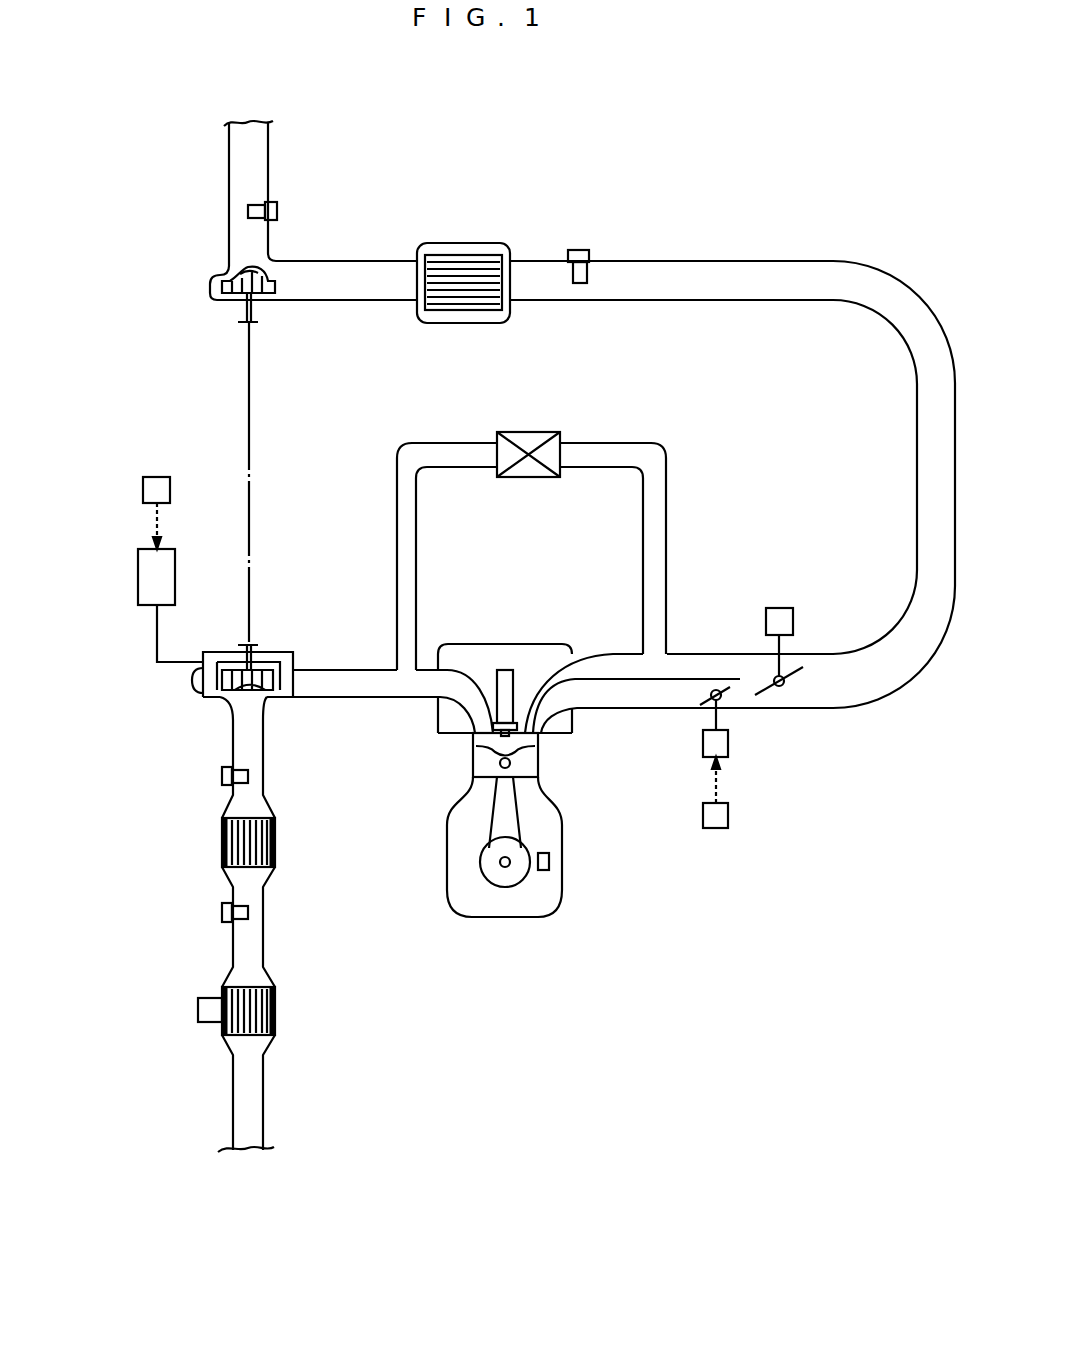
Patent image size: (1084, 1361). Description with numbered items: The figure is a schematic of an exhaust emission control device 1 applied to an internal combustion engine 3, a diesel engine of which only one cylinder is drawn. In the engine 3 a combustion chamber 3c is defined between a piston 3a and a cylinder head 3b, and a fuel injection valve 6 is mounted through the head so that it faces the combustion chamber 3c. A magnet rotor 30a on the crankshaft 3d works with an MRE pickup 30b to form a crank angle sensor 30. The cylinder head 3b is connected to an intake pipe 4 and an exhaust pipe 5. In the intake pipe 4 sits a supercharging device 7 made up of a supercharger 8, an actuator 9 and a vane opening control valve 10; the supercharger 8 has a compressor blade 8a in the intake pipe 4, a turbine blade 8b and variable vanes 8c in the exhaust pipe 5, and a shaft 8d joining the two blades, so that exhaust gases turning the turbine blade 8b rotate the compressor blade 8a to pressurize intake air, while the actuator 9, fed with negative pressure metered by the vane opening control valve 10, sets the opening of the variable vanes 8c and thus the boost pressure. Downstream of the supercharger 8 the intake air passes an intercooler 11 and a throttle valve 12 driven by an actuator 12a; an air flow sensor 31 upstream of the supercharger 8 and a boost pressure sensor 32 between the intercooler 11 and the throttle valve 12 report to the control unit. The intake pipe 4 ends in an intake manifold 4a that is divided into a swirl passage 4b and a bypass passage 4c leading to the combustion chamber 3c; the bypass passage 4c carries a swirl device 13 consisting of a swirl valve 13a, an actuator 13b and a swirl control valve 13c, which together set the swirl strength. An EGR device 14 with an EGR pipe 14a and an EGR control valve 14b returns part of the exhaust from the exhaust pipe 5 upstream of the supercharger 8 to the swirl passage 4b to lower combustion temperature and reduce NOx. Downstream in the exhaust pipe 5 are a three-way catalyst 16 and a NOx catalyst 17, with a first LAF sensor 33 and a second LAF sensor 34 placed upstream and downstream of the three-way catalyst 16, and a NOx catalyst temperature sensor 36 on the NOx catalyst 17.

The exhaust emission control device 1 is at (138, 1207).
The internal combustion engine 3 is at (522, 796).
The piston 3a is at (532, 763).
The cylinder head 3b is at (535, 653).
The combustion chamber 3c is at (539, 738).
The crankshaft 3d is at (512, 857).
The intake pipe 4 is at (228, 164).
The intake manifold 4a is at (715, 652).
The swirl passage 4b is at (613, 667).
The bypass passage 4c is at (612, 693).
The exhaust pipe 5 is at (355, 698).
The fuel injection valve 6 is at (503, 677).
The supercharging device 7 is at (83, 812).
The supercharger 8 is at (243, 473).
The compressor blade 8a is at (274, 287).
The turbine blade 8b is at (267, 699).
The variable vanes 8c is at (212, 690).
The shaft 8d is at (248, 447).
The actuator 9 is at (138, 580).
The vane opening control valve 10 is at (143, 490).
The intercooler 11 is at (470, 243).
The throttle valve 12 is at (800, 660).
The actuator 12a is at (785, 607).
The swirl device 13 is at (779, 779).
The swirl valve 13a is at (733, 692).
The actuator 13b is at (728, 745).
The swirl control valve 13c is at (728, 815).
The EGR device 14 is at (491, 496).
The EGR pipe 14a is at (395, 540).
The EGR control valve 14b is at (512, 478).
The three-way catalyst 16 is at (276, 840).
The NOx catalyst 17 is at (276, 1010).
The crank angle sensor 30 is at (531, 934).
The magnet rotor 30a is at (508, 888).
The MRE pickup 30b is at (546, 872).
The air flow sensor 31 is at (277, 208).
The boost pressure sensor 32 is at (582, 247).
The first LAF sensor 33 is at (222, 775).
The second LAF sensor 34 is at (222, 912).
The NOx catalyst temperature sensor 36 is at (198, 1008).